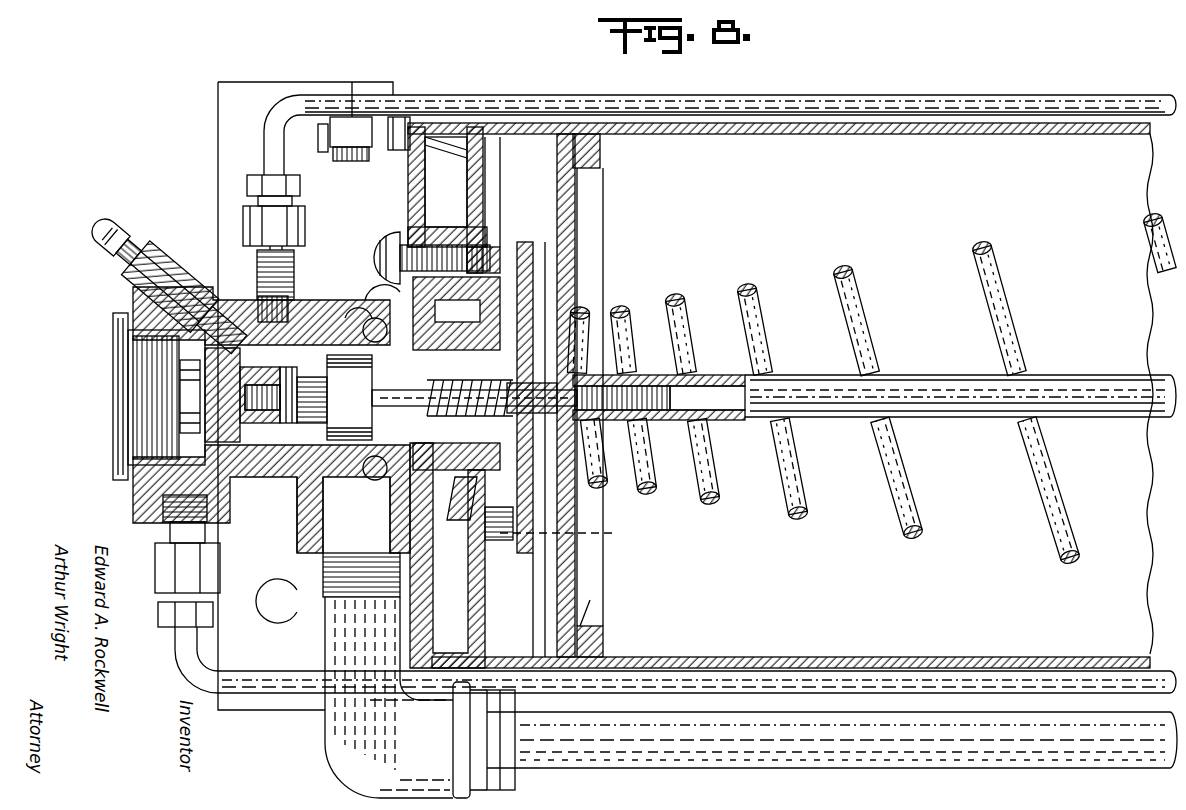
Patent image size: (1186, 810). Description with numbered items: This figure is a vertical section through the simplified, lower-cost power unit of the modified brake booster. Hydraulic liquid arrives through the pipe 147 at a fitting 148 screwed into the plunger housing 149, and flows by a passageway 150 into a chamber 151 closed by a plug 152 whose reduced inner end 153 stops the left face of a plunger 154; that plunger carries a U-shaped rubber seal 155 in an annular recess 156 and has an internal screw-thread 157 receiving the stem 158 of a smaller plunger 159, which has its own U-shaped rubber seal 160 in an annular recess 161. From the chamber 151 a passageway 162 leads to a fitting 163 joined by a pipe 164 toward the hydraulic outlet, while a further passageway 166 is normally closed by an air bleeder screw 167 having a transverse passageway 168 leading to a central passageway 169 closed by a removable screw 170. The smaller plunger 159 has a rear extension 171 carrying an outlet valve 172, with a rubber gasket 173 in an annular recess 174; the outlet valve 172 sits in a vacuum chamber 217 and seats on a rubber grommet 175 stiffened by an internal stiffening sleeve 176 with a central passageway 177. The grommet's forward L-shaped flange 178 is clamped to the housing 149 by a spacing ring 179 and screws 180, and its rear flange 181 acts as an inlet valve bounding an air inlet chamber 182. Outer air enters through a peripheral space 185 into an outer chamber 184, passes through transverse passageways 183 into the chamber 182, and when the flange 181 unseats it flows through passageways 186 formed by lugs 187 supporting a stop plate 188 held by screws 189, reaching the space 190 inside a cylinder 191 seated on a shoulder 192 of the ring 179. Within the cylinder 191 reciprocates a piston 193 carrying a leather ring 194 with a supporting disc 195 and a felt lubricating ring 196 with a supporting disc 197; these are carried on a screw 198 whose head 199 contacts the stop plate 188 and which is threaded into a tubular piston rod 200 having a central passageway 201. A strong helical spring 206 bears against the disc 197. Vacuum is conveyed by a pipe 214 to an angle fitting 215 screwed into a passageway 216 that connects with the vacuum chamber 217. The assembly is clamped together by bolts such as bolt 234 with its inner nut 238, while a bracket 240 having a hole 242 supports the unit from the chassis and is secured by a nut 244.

The pipe 147 is at (198, 678).
The fitting 148 is at (160, 566).
The plunger housing 149 is at (145, 500).
The passageway 150 is at (271, 499).
The chamber 151 is at (261, 316).
The plug 152 is at (115, 368).
The reduced inner end 153 is at (185, 386).
The plunger 154 is at (209, 326).
The U-shaped rubber seal 155 is at (242, 463).
The annular recess 156 is at (231, 382).
The internal screw-thread 157 is at (260, 393).
The stem 158 is at (272, 401).
The smaller plunger 159 is at (360, 332).
The U-shaped rubber seal 160 is at (351, 467).
The annular recess 161 is at (294, 463).
The passageway 162 is at (311, 338).
The fitting 163 is at (302, 220).
The pipe 164 is at (290, 126).
The passageway 166 is at (244, 312).
The air bleeder screw 167 is at (222, 292).
The transverse passageway 168 is at (214, 250).
The central passageway 169 is at (142, 288).
The removable screw 170 is at (112, 245).
The extension 171 is at (474, 382).
The outlet valve 172 is at (373, 496).
The rubber gasket 173 is at (343, 515).
The annular recess 174 is at (334, 397).
The rubber grommet 175 is at (457, 309).
The internal stiffening sleeve 176 is at (454, 446).
The passageway 177 is at (470, 387).
The L-shaped flange 178 is at (373, 296).
The spacing ring 179 is at (480, 213).
The screws 180 is at (374, 250).
The rear flange 181 is at (456, 311).
The air inlet chamber 182 is at (506, 397).
The transverse passageways 183 is at (463, 501).
The outer chamber 184 is at (445, 198).
The peripheral space 185 is at (418, 128).
The passageways 186 is at (509, 543).
The lugs 187 is at (480, 592).
The stop plate 188 is at (580, 510).
The screws 189 is at (568, 533).
The space 190 is at (492, 140).
The cylinder 191 is at (840, 126).
The shoulder 192 is at (470, 148).
The piston 193 is at (568, 563).
The leather ring 194 is at (525, 605).
The supporting disc 195 is at (526, 605).
The felt lubricating ring 196 is at (590, 622).
The supporting disc 197 is at (603, 640).
The screw 198 is at (640, 376).
The head 199 is at (517, 411).
The tubular piston rod 200 is at (1080, 378).
The central passageway 201 is at (716, 412).
The helical spring 206 is at (990, 290).
The pipe 214 is at (790, 758).
The angle fitting 215 is at (330, 735).
The passageway 216 is at (300, 538).
The vacuum chamber 217 is at (343, 306).
The bolt 234 is at (309, 144).
The inner nut 238 is at (400, 118).
The bracket 240 is at (218, 150).
The hole 242 is at (285, 606).
The nut 244 is at (352, 122).